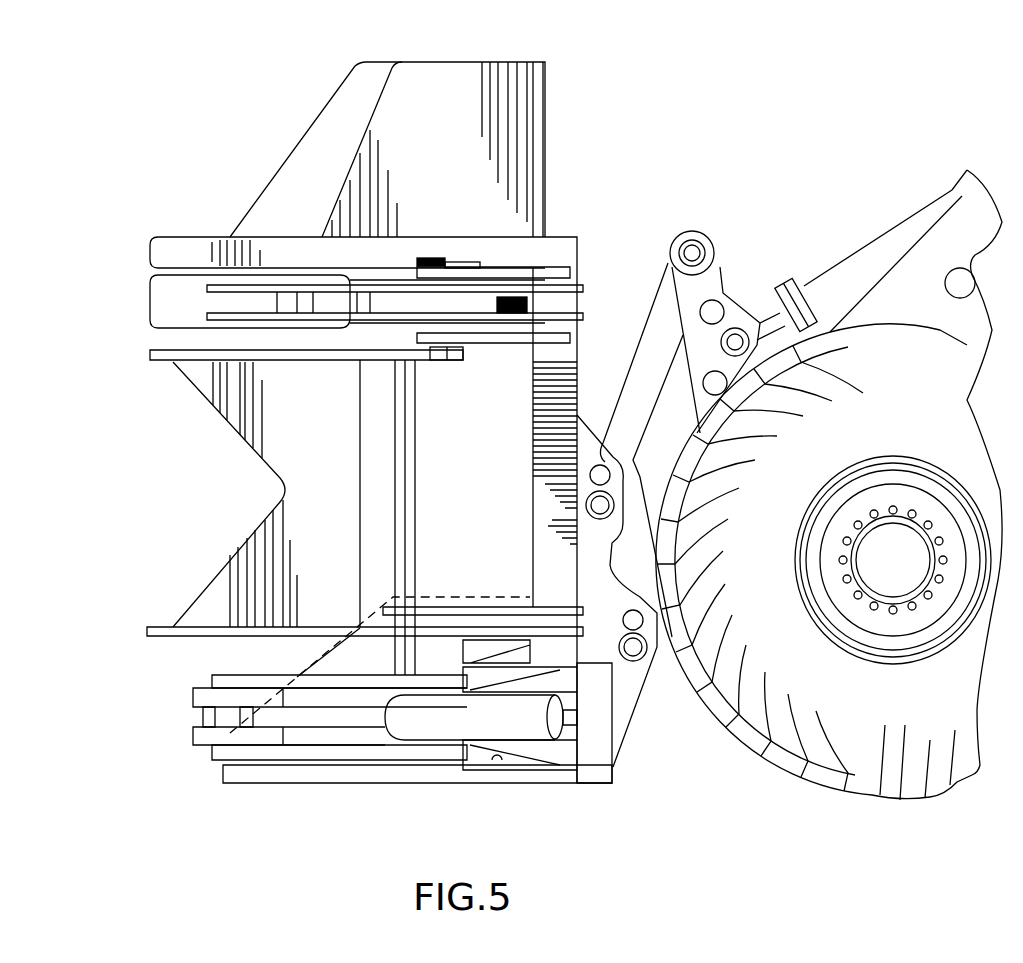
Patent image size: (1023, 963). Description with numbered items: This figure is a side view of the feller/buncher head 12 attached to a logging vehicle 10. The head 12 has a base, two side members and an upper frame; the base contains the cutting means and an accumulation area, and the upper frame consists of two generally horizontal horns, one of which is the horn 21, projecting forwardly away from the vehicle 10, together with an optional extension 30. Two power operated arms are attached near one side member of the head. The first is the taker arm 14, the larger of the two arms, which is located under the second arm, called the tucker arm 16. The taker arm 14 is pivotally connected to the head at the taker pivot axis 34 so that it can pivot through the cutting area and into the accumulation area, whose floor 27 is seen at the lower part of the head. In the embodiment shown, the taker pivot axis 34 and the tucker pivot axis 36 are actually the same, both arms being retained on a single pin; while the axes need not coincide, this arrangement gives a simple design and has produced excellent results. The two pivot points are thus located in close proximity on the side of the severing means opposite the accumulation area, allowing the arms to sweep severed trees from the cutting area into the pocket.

The logging vehicle 10 is at (947, 173).
The feller/buncher head 12 is at (567, 193).
The taker arm 14 is at (207, 583).
The tucker arm 16 is at (147, 302).
The horn 21 is at (190, 235).
The floor 27 is at (497, 762).
The extension 30 is at (498, 64).
The taker pivot axis 34 is at (440, 363).
The tucker pivot axis 36 is at (447, 260).